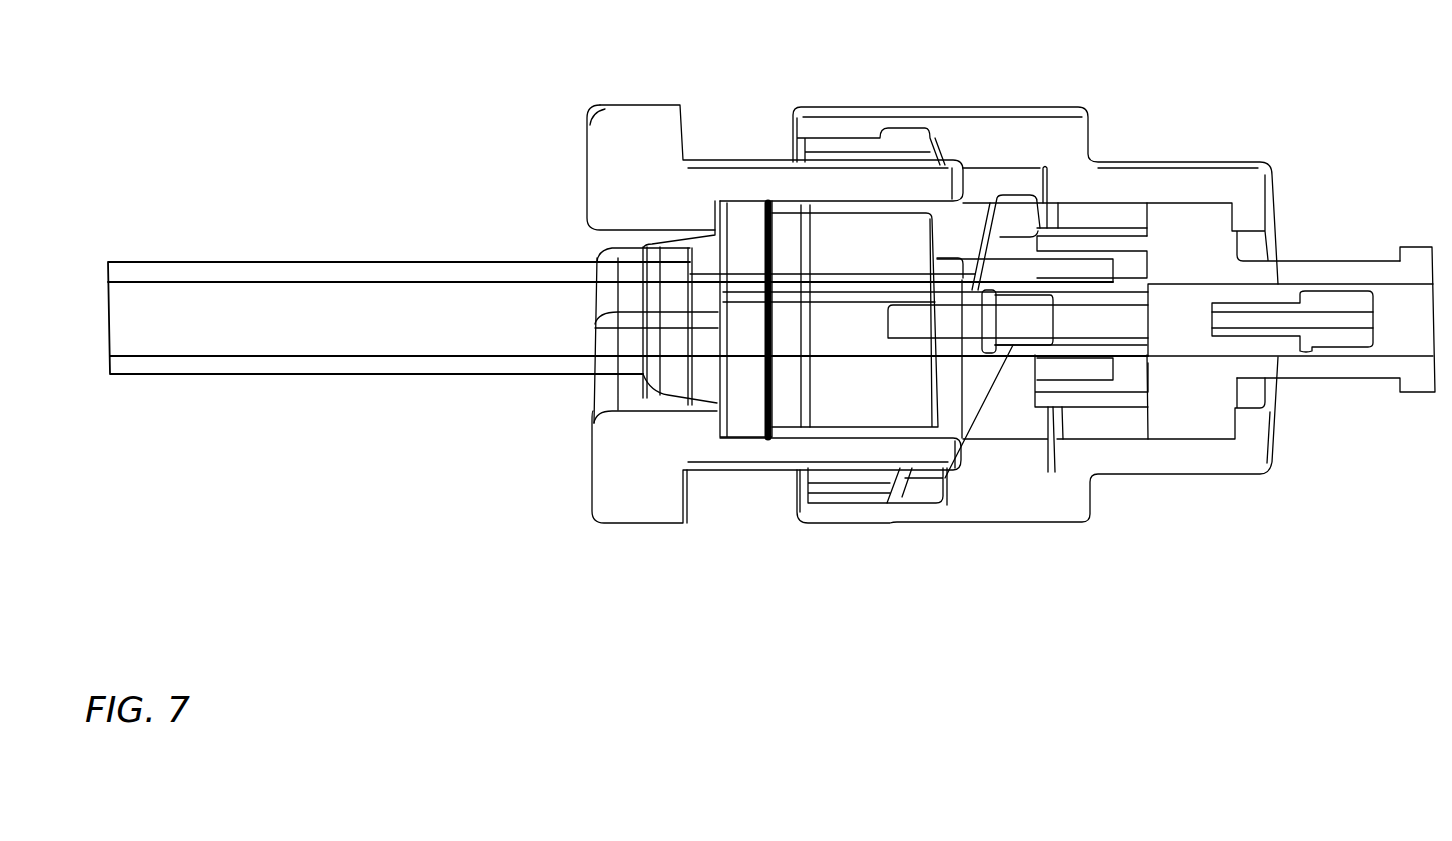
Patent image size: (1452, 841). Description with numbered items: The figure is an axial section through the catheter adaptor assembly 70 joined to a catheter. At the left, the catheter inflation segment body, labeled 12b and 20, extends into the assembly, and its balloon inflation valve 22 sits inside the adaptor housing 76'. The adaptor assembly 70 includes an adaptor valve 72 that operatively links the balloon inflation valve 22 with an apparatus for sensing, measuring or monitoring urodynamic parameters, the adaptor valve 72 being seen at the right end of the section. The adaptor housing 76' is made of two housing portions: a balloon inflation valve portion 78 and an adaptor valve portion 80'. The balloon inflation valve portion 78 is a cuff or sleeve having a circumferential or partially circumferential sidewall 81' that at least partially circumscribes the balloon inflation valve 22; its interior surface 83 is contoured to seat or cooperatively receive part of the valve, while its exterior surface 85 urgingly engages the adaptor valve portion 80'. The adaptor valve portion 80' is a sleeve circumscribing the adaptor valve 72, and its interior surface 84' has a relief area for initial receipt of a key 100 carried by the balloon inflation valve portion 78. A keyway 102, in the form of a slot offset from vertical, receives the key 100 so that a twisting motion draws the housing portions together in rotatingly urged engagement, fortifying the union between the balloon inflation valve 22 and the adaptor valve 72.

The tubing 12b is at (292, 262).
The tube lumen 20 is at (178, 345).
The balloon inflation valve 22 is at (860, 399).
The adaptor assembly 70 is at (993, 562).
The adaptor valve 72 is at (1370, 375).
The adaptor housing 76' is at (784, 432).
The balloon inflation valve portion 78 is at (663, 99).
The adaptor valve portion 80' is at (1096, 307).
The sidewall 81' is at (776, 493).
The interior surface 83 is at (947, 418).
The interior surface 84' is at (1069, 351).
The exterior surface 85 is at (663, 158).
The key 100 is at (920, 504).
The keyway 102 is at (980, 397).